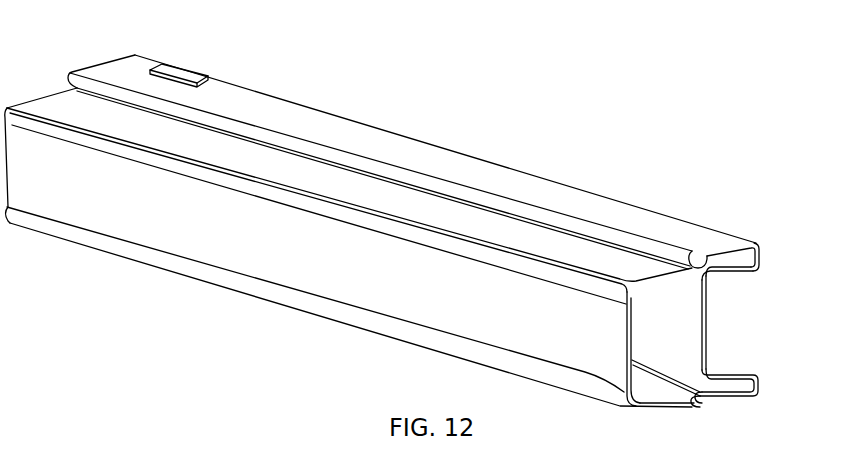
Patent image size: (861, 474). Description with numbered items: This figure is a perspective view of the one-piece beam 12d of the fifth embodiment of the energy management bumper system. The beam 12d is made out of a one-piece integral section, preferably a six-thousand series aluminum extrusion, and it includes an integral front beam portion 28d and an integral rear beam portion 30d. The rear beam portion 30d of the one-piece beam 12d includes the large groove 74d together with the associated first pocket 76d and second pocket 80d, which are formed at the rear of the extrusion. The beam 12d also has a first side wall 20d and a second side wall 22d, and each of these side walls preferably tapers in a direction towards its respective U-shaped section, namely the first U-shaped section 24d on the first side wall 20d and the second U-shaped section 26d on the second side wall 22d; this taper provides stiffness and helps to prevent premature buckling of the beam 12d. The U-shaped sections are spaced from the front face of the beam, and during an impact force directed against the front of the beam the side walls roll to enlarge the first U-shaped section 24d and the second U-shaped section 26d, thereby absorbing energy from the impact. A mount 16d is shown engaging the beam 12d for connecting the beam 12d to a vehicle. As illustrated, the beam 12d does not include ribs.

The beam 12d is at (384, 118).
The mount 16d is at (196, 58).
The second side wall 22d is at (44, 97).
The front beam portion 28d is at (53, 198).
The second U-shaped section 26d is at (666, 257).
The second pocket 80d is at (744, 264).
The rear beam portion 30d is at (746, 284).
The large groove 74d is at (776, 317).
The first pocket 76d is at (752, 385).
The first U-shaped section 24d is at (688, 408).
The first side wall 20d is at (660, 410).